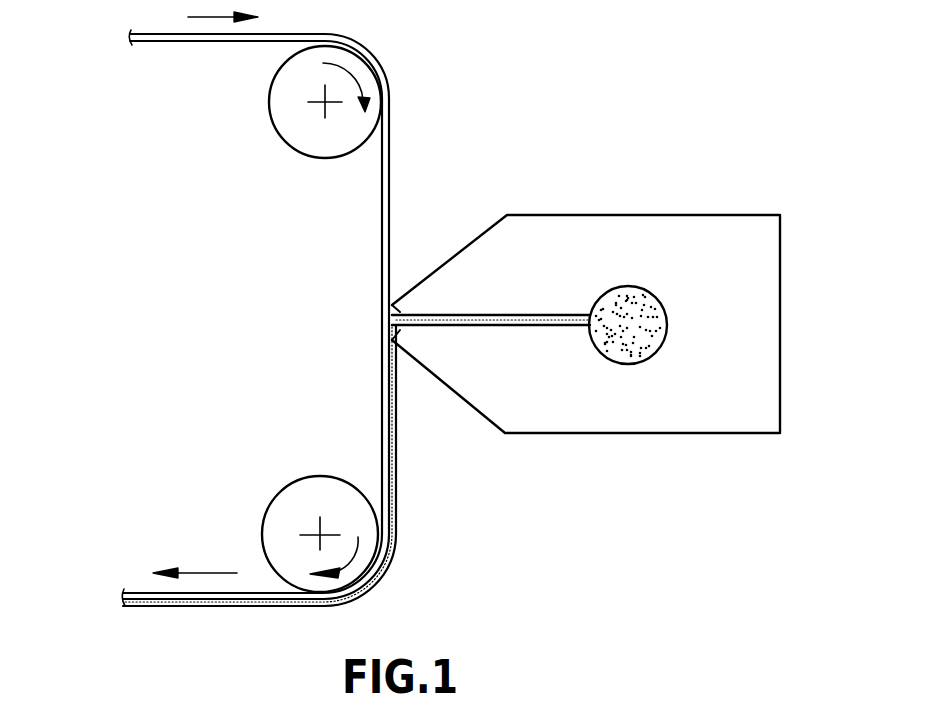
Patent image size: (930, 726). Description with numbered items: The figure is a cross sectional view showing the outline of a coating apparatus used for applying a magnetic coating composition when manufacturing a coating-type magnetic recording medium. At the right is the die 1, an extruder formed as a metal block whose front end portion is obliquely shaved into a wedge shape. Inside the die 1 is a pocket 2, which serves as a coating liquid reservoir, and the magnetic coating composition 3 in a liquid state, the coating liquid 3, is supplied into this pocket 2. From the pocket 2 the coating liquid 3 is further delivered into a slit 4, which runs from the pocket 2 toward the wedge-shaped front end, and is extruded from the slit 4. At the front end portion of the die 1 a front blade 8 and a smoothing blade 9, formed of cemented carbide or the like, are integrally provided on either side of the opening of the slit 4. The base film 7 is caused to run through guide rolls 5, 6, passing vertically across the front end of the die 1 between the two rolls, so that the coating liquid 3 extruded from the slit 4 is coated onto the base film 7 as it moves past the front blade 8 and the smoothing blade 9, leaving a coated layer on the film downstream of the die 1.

The die 1 is at (686, 214).
The pocket 2 is at (637, 365).
The magnetic coating composition 3 is at (396, 495).
The slit 4 is at (447, 327).
The guide roll 5 is at (283, 123).
The guide roll 6 is at (276, 522).
The base film 7 is at (391, 153).
The front blade 8 is at (391, 305).
The smoothing blade 9 is at (398, 338).